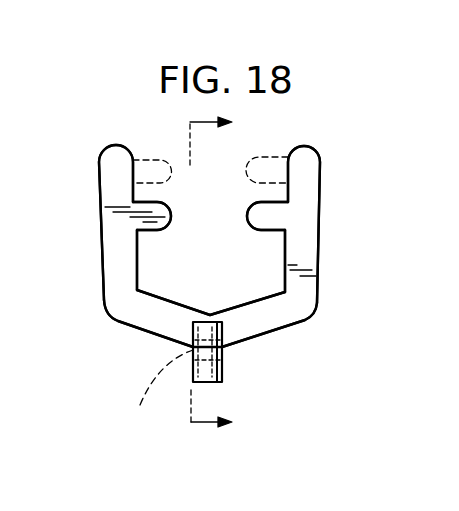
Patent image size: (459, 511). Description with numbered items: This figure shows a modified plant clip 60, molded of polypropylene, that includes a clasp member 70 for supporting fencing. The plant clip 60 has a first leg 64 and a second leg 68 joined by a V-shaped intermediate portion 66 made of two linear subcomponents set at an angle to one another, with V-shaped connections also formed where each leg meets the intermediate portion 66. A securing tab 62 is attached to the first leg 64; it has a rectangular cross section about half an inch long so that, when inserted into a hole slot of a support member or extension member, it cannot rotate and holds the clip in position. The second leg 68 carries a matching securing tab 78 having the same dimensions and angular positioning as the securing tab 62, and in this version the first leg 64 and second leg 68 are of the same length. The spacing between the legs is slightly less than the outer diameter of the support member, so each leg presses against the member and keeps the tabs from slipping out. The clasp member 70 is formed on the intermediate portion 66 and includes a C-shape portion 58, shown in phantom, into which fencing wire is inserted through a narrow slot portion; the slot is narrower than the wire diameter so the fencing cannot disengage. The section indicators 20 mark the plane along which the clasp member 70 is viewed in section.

The plant clip 60 is at (317, 282).
The securing tab 62 is at (154, 210).
The first leg 64 is at (113, 263).
The intermediate portion 66 is at (157, 318).
The second leg 68 is at (308, 243).
The clasp member 70 is at (222, 365).
The securing tab 78 is at (268, 212).
The C-shape portion 58 is at (157, 392).
The section line 20- 20 is at (239, 291).